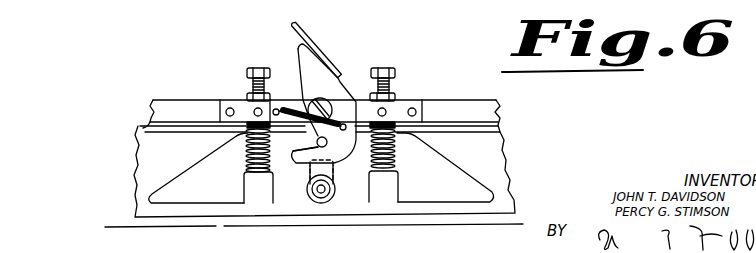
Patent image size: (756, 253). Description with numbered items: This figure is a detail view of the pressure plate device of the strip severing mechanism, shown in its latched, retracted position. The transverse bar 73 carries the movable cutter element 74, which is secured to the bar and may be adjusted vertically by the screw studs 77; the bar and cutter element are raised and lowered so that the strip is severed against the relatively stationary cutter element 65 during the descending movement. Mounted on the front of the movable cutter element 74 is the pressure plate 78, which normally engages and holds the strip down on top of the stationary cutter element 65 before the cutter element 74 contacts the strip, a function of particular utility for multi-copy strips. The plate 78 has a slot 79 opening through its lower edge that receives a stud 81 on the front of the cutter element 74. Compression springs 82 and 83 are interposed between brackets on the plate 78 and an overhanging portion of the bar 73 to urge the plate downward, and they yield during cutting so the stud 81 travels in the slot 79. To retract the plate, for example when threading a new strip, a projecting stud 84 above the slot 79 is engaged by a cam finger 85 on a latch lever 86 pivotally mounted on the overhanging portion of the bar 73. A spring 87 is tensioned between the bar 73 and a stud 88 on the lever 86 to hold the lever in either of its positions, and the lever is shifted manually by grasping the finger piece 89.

The cutter element 65 is at (113, 227).
The transverse bar 73 is at (167, 107).
The cutter element 74 is at (146, 149).
The screw studs 77 is at (255, 68).
The pressure plate 78 is at (177, 176).
The slot 79 is at (328, 170).
The stud 81 is at (326, 190).
The compression spring 82 is at (245, 157).
The compression spring 83 is at (397, 158).
The projecting stud 84 is at (316, 143).
The cam finger 85 is at (297, 153).
The latch lever 86 is at (298, 66).
The spring 87 is at (329, 117).
The stud 88 is at (344, 131).
The finger piece 89 is at (299, 27).